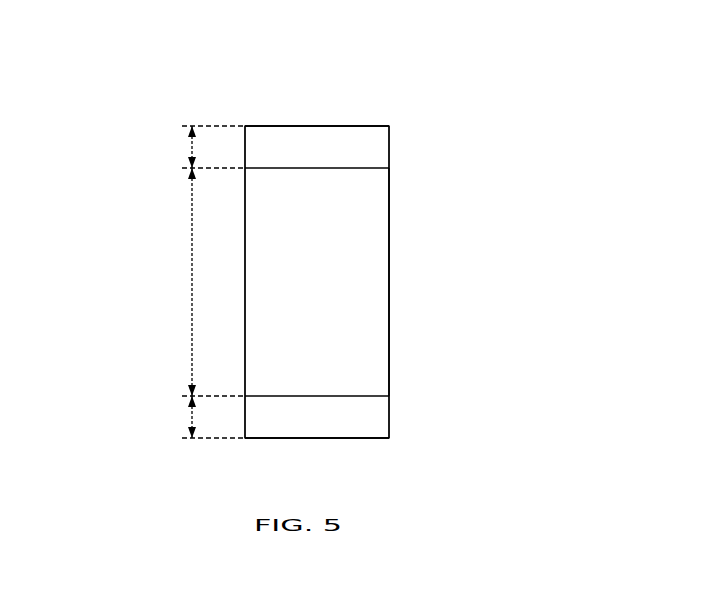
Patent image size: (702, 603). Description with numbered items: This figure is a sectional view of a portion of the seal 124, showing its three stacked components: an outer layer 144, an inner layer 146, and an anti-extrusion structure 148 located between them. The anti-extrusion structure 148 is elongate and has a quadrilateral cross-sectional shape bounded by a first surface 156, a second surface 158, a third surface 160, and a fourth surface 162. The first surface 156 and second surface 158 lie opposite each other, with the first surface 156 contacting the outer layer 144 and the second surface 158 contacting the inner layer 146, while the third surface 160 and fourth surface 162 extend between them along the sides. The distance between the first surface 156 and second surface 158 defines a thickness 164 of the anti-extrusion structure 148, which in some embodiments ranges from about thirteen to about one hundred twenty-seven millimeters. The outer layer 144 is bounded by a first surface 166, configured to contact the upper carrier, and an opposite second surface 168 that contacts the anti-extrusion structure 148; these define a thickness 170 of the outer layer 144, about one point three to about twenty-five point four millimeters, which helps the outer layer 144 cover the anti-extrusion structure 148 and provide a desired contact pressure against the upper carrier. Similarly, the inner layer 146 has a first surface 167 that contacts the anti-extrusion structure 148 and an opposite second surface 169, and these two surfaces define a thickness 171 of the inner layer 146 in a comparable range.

The seal 124 is at (184, 78).
The outer layer 144 is at (341, 135).
The inner layer 146 is at (347, 430).
The anti-extrusion structure 148 is at (375, 251).
The first surface 156 is at (362, 168).
The second surface 158 is at (361, 396).
The third surface 160 is at (245, 272).
The fourth surface 162 is at (391, 297).
The thickness 164 is at (192, 272).
The first surface 166 is at (293, 127).
The first surface 167 is at (280, 398).
The second surface 168 is at (277, 168).
The second surface 169 is at (287, 440).
The thickness 170 is at (192, 145).
The thickness 171 is at (192, 416).